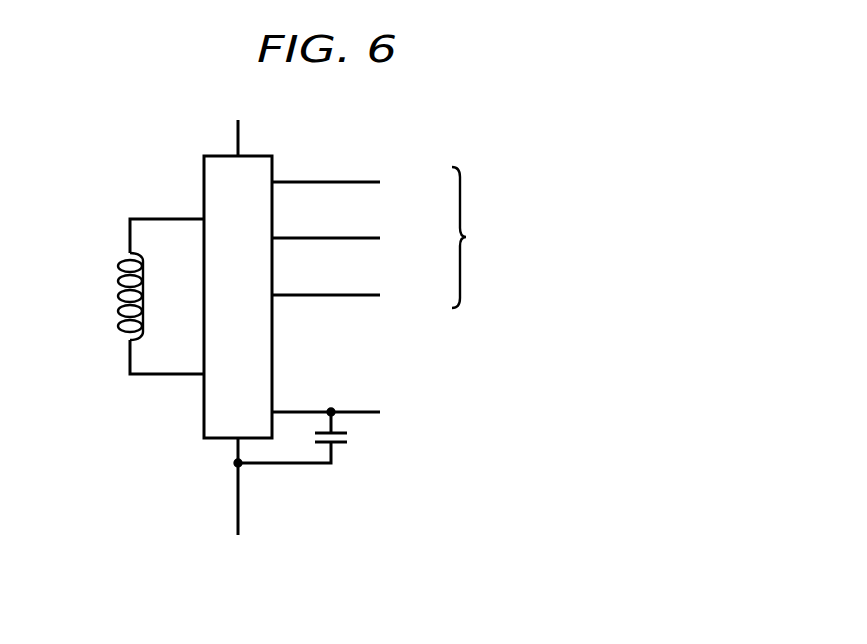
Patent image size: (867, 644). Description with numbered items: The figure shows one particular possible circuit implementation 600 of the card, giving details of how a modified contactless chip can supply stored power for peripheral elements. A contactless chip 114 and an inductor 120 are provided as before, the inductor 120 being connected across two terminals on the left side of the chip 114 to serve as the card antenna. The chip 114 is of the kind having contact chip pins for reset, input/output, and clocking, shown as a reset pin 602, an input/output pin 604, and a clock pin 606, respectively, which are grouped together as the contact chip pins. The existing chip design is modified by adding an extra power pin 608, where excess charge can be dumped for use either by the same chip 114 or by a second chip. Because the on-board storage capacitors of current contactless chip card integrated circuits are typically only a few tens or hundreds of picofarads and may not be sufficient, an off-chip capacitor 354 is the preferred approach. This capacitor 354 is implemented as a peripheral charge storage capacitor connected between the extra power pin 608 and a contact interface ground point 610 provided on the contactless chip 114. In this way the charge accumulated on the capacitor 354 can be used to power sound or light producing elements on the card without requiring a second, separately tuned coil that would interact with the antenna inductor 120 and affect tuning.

The circuit implementation 600 is at (506, 128).
The contactless chip 114 is at (203, 167).
The inductor 120 is at (118, 292).
The reset contact chip pin 602 is at (310, 181).
The input/output contact chip pin 604 is at (310, 237).
The clock contact chip pin 606 is at (310, 294).
The extra power pin 608 is at (310, 410).
The off-chip peripheral charge storage capacitor 354 is at (338, 447).
The contact interface ground point 610 is at (237, 488).